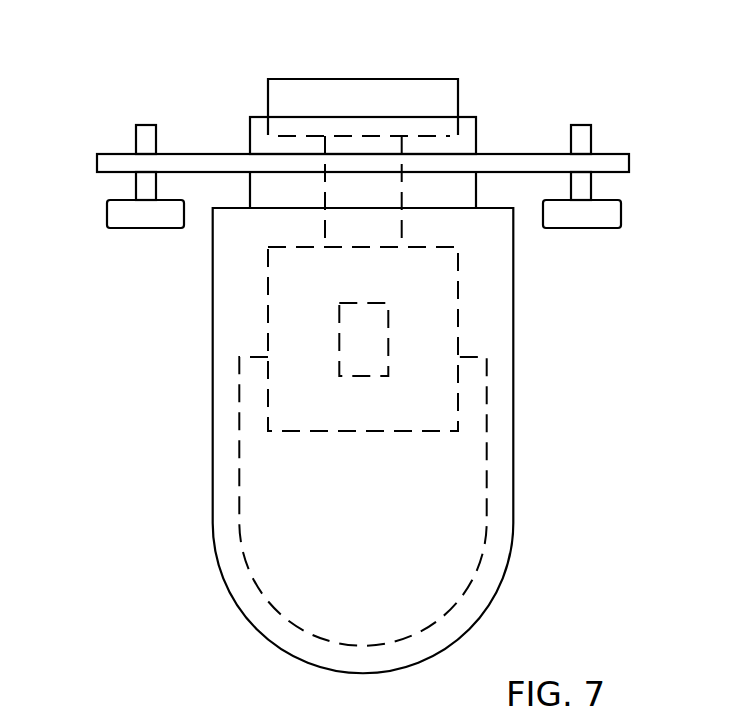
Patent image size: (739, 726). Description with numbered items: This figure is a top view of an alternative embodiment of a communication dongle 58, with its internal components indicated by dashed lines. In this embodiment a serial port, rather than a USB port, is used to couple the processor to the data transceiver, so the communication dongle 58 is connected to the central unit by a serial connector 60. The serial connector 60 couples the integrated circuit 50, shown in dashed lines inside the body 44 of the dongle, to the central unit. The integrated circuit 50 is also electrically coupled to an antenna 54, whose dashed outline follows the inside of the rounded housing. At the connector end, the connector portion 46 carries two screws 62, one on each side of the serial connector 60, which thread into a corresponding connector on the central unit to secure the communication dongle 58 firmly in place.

The housing body 44 is at (233, 598).
The connector portion 46 is at (478, 127).
The integrated circuit 50 is at (363, 338).
The antenna 54 is at (477, 570).
The communication dongle 58 is at (153, 80).
The serial connector 60 is at (443, 80).
The screws 62 is at (117, 213).